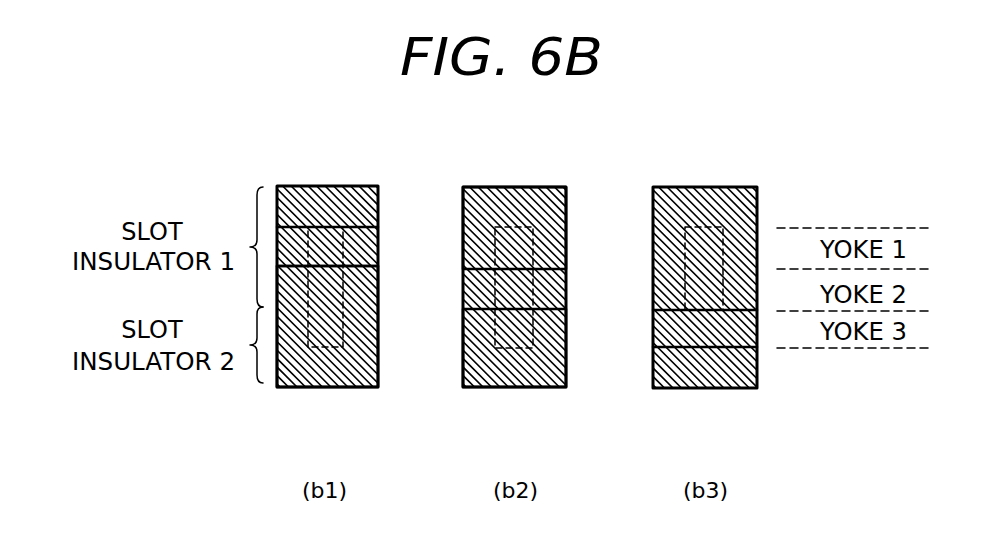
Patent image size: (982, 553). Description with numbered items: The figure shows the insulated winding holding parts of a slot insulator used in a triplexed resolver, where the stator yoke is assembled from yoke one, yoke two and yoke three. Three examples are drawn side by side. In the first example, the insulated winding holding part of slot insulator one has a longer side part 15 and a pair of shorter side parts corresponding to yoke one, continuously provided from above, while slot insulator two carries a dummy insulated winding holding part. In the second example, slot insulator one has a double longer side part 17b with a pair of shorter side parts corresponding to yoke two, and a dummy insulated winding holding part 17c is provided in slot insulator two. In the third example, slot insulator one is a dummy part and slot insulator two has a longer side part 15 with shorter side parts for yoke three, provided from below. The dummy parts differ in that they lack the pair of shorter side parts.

The longer side part 15 is at (303, 197).
The double longer side part 17b is at (542, 187).
The dummy insulated winding holding part 17c is at (532, 388).